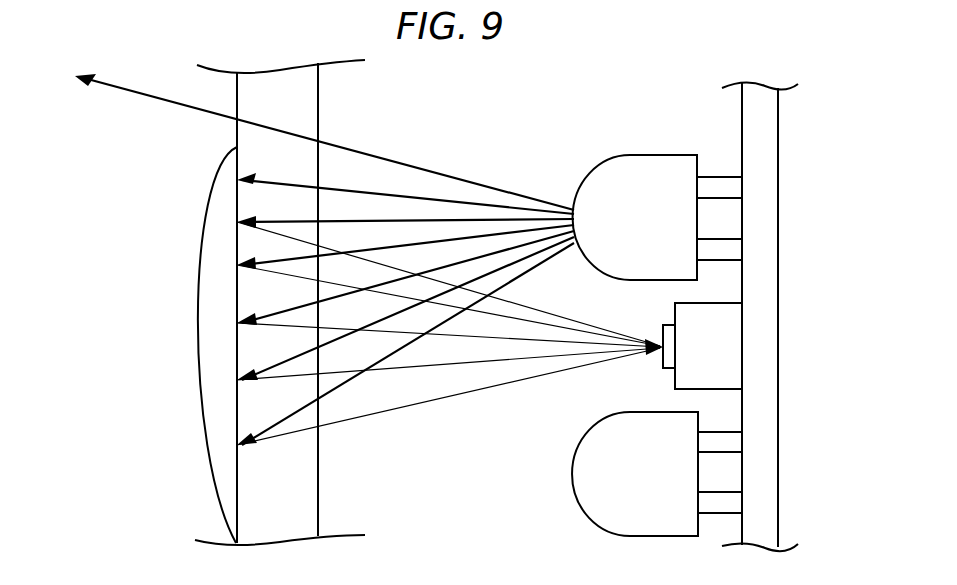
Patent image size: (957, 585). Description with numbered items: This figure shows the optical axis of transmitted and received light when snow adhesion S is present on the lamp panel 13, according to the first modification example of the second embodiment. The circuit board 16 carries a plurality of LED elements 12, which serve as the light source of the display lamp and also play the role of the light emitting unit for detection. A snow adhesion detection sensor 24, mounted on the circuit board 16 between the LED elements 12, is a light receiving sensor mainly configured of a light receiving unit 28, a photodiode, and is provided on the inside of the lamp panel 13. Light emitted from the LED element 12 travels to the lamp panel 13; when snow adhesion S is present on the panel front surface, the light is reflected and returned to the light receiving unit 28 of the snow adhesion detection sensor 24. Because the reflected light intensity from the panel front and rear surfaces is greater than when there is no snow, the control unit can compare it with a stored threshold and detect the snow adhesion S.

The LED element 12 is at (648, 155).
The lamp panel 13 is at (318, 82).
The circuit board 16 is at (765, 167).
The snow adhesion detection sensor 24 is at (710, 300).
The light receiving unit 28 is at (657, 358).
The snow adhesion S is at (215, 417).